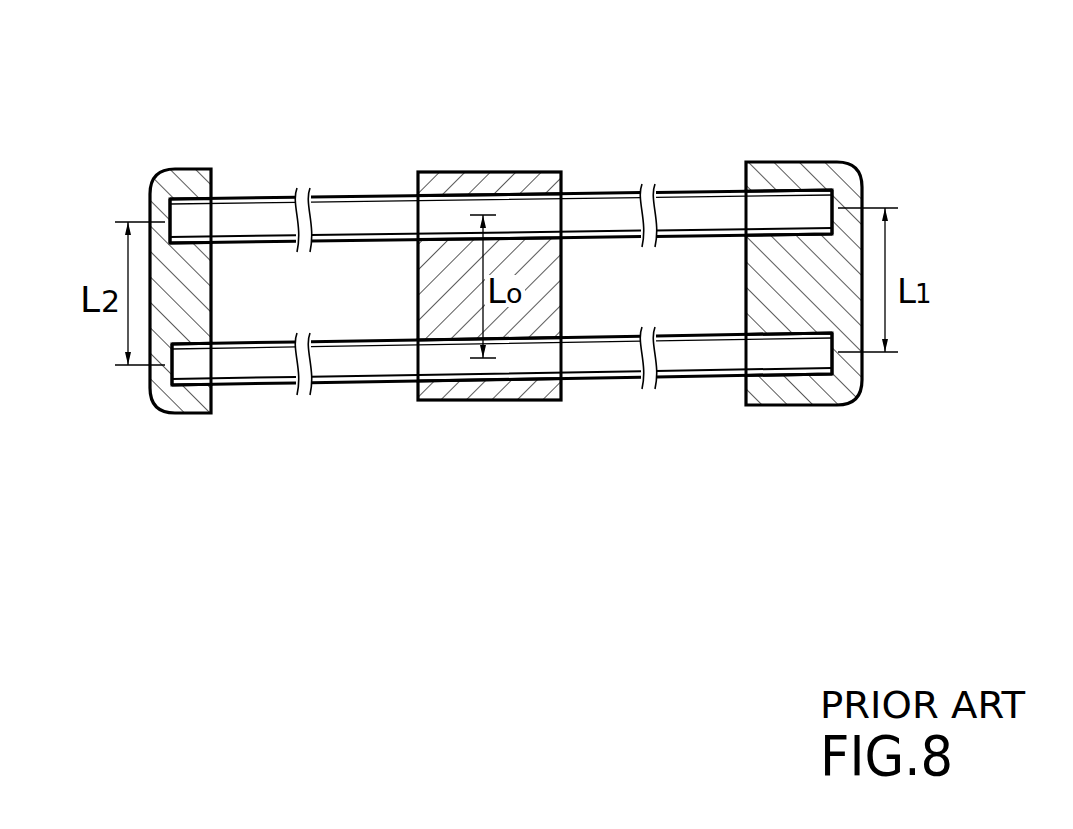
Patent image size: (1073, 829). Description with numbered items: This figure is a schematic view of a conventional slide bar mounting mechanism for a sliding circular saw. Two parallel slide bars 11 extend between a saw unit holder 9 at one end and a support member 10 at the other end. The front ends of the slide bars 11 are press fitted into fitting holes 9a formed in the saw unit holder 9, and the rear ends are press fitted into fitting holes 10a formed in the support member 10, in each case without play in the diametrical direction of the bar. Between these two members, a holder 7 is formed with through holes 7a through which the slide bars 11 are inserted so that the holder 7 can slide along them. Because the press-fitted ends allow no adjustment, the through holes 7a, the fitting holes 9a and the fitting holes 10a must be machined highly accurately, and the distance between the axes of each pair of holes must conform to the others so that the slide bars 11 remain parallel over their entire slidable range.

The holder 7 is at (478, 172).
The through holes 7a is at (505, 194).
The saw unit holder 9 is at (800, 162).
The fitting holes 9a is at (768, 191).
The support member 10 is at (176, 169).
The fitting holes 10a is at (189, 199).
The slide bars 11 is at (360, 198).